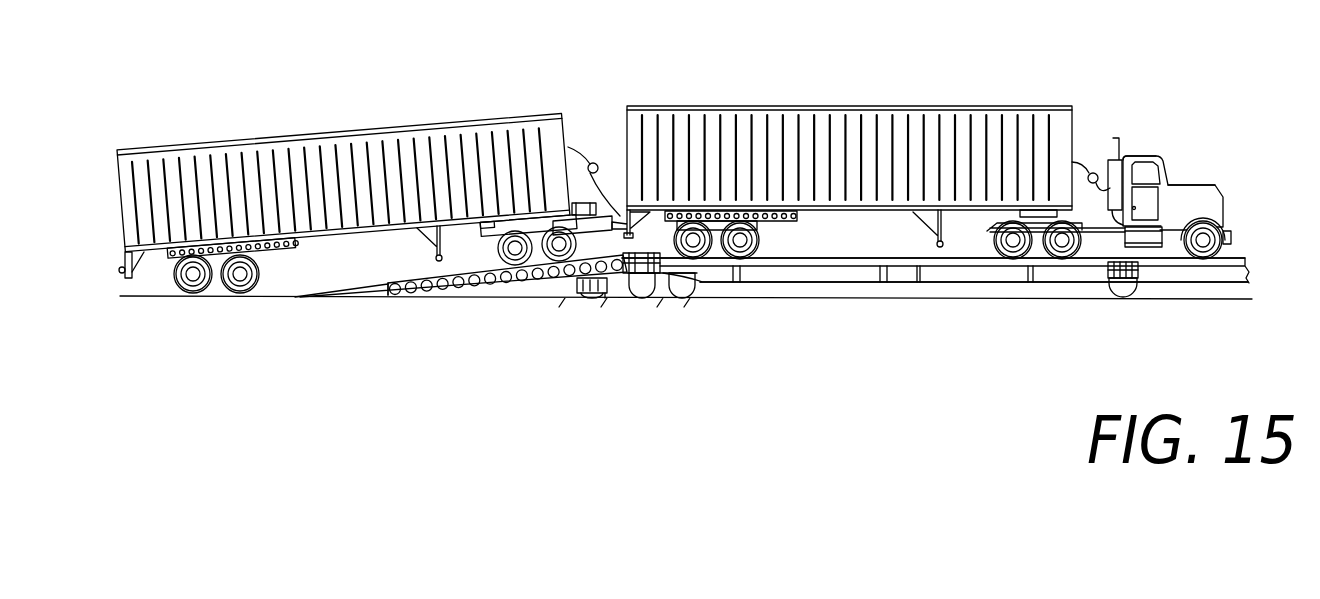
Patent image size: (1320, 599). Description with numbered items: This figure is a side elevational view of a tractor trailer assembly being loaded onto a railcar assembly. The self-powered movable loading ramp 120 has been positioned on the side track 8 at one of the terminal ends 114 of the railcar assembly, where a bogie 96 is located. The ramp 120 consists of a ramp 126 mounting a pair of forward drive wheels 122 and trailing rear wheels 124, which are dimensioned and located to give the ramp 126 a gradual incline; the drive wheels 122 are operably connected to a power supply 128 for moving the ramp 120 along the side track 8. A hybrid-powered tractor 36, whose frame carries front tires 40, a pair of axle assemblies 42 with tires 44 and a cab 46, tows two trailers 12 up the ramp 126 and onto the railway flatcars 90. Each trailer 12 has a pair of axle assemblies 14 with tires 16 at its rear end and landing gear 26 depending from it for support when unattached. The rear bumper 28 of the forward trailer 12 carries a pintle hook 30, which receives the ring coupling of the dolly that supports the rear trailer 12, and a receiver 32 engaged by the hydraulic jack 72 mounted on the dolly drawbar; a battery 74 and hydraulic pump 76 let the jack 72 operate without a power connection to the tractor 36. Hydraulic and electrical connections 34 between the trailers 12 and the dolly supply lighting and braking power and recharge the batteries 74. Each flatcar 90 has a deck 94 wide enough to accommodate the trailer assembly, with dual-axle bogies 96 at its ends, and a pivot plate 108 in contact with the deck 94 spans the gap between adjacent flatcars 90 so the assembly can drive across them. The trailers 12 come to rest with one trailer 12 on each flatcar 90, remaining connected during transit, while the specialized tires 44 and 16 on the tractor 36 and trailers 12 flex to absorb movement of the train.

The side track 8 is at (872, 300).
The trailer 12 is at (258, 133).
The axle assemblies 14 is at (240, 278).
The tires 16 is at (256, 290).
The landing gear 26 is at (434, 257).
The rear bumper 28 is at (136, 275).
The pintle hook 30 is at (120, 273).
The receiver 32 is at (121, 268).
The hydraulic and electrical connections 34 is at (594, 162).
The tractor 36 is at (1205, 155).
The front tires 40 is at (1226, 251).
The axle assemblies 42 is at (1062, 243).
The tires 44 is at (1079, 258).
The cab 46 is at (1138, 156).
The hydraulic jack 72 is at (612, 218).
The battery 74 is at (590, 216).
The hydraulic pump 76 is at (584, 203).
The railway flatcar 90 is at (825, 284).
The deck 94 is at (918, 284).
The dual-axle bogies 96 is at (636, 321).
The pivot plate 108 is at (1160, 276).
The terminal ends 114 is at (663, 300).
The movable loading ramp 120 is at (501, 335).
The forward drive wheels 122 is at (578, 296).
The trailing rear wheels 124 is at (443, 297).
The ramp 126 is at (366, 282).
The power supply 128 is at (607, 297).